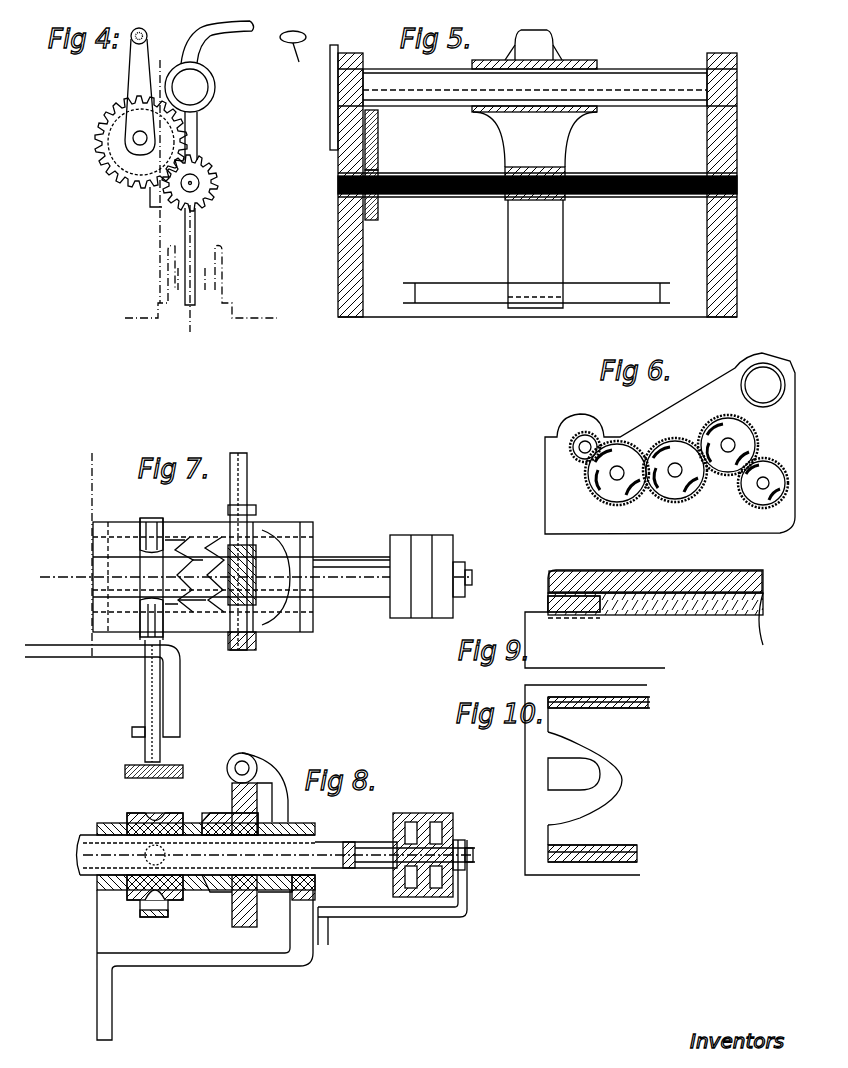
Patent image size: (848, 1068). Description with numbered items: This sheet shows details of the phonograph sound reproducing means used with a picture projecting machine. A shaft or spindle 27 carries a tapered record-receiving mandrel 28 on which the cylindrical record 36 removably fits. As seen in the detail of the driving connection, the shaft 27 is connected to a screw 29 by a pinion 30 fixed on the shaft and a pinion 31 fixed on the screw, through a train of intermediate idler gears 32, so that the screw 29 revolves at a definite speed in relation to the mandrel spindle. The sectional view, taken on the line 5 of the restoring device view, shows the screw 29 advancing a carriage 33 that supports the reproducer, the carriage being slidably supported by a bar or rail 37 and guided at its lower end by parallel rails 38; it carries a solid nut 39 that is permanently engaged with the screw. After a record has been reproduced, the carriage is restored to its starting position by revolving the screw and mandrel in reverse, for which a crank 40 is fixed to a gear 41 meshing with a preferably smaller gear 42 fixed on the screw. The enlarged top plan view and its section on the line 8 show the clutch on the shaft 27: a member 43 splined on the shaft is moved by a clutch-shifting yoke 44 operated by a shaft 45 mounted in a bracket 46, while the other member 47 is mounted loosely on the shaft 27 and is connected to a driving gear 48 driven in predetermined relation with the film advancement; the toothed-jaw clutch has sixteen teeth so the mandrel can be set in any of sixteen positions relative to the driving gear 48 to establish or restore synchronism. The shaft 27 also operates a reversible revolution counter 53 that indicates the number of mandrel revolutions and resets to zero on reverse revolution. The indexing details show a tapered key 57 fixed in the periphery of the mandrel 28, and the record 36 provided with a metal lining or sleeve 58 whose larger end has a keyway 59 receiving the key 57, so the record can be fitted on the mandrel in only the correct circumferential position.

In FIG. 4, the section line 5 is at (202, 173).
In FIG. 7, the section line 8 is at (269, 577).
In FIG. 6, the shaft or spindle 27 is at (537, 470).
In FIG. 8, the shaft or spindle 27 is at (255, 872).
In FIG. 9, the record-receiving mandrel 28 is at (595, 640).
In FIG. 5, the screw 29 is at (537, 171).
In FIG. 6, the screw 29 is at (773, 519).
In FIG. 6, the pinion 30 is at (596, 424).
In FIG. 6, the pinion 31 is at (752, 509).
In FIG. 6, the intermediate idler gears 32 is at (671, 449).
In FIG. 5, the carriage 33 is at (535, 254).
In FIG. 9, the record 36 is at (655, 567).
In FIG. 5, the bar or rail 37 is at (537, 68).
In FIG. 4, the parallel rails 38 is at (201, 282).
In FIG. 5, the parallel rails 38 is at (536, 275).
In FIG. 5, the nut 39 is at (529, 164).
In FIG. 4, the crank 40 is at (183, 91).
In FIG. 4, the gear 41 is at (123, 146).
In FIG. 5, the gear 41 is at (391, 140).
In FIG. 4, the gear 42 is at (211, 173).
In FIG. 5, the gear 42 is at (391, 181).
In FIG. 8, the clutch member 43 is at (161, 849).
In FIG. 7, the clutch-shifting yoke 44 is at (182, 564).
In FIG. 7, the shaft 45 is at (140, 709).
In FIG. 7, the bracket 46 is at (162, 595).
In FIG. 8, the clutch member 47 is at (242, 794).
In FIG. 8, the driving gear 48 is at (258, 912).
In FIG. 8, the revolution counter 53 is at (433, 844).
In FIG. 10, the tapered key 57 is at (574, 789).
In FIG. 9, the metal lining or sleeve 58 is at (655, 619).
In FIG. 9, the keyway 59 is at (595, 605).